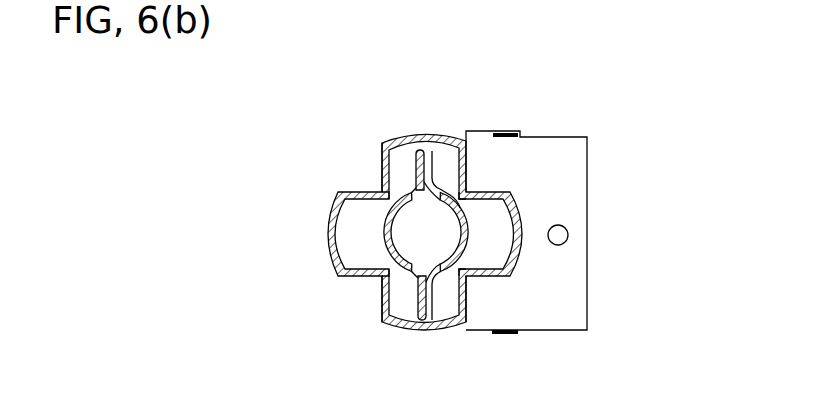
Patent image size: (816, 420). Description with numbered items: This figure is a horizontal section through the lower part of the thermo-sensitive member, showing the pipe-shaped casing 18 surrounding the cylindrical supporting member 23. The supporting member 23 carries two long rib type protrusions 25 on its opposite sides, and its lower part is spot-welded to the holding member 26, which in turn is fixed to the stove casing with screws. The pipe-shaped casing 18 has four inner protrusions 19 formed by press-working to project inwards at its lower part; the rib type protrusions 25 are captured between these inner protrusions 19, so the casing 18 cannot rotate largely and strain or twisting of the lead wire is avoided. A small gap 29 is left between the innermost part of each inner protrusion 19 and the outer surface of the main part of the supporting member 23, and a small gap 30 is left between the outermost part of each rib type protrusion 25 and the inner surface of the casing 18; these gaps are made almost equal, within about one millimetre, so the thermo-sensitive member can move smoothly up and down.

The pipe-shaped casing 18 is at (328, 243).
The inner protrusions 19 is at (377, 189).
The supporting member 23 is at (383, 223).
The rib type protrusions 25 is at (411, 187).
The holding member 26 is at (570, 172).
The small gap 29 is at (377, 203).
The small gap 30 is at (420, 150).